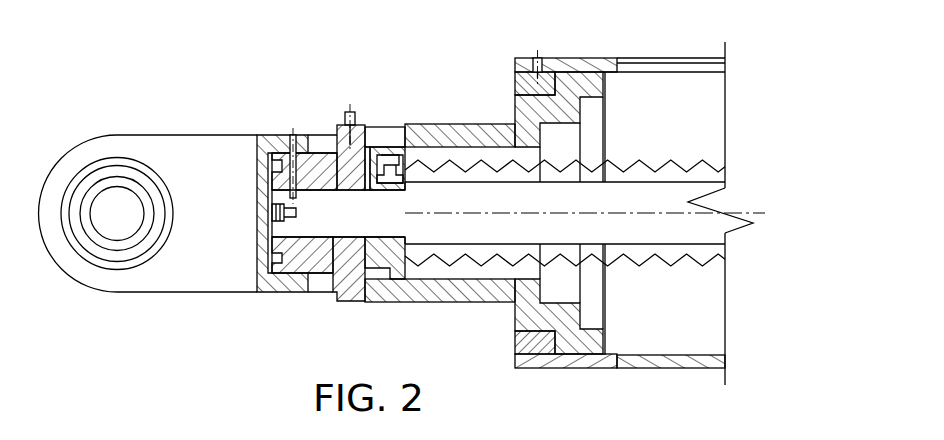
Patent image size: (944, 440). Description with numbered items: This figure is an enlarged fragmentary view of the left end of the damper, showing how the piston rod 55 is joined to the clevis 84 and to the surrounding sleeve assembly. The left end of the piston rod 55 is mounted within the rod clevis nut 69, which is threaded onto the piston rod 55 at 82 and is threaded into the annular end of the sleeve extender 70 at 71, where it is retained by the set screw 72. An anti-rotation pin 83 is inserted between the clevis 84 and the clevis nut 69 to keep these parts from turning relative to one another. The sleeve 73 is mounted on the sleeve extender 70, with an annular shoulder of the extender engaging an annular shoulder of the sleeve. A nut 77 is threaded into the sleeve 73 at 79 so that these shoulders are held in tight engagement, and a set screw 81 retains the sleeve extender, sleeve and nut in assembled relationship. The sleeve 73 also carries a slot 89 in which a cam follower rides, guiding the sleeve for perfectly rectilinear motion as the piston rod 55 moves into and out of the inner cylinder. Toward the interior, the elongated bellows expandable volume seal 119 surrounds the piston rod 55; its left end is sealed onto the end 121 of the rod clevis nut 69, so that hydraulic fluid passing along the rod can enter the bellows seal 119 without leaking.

The piston rod 55 is at (640, 183).
The rod clevis nut 69 is at (362, 238).
The sleeve extender 70 is at (482, 125).
The threaded connection 71 is at (345, 302).
The set screw 72 is at (345, 122).
The sleeve 73 is at (613, 62).
The nut 77 is at (515, 80).
The threaded connection 79 is at (515, 58).
The set screw 81 is at (543, 58).
The threaded connection 82 is at (300, 237).
The anti-rotation pin 83 is at (292, 135).
The clevis 84 is at (190, 135).
The slot 89 is at (663, 70).
The elongated bellows expandable volume seal 119 is at (637, 268).
The end of rod clevis nut 121 is at (406, 168).